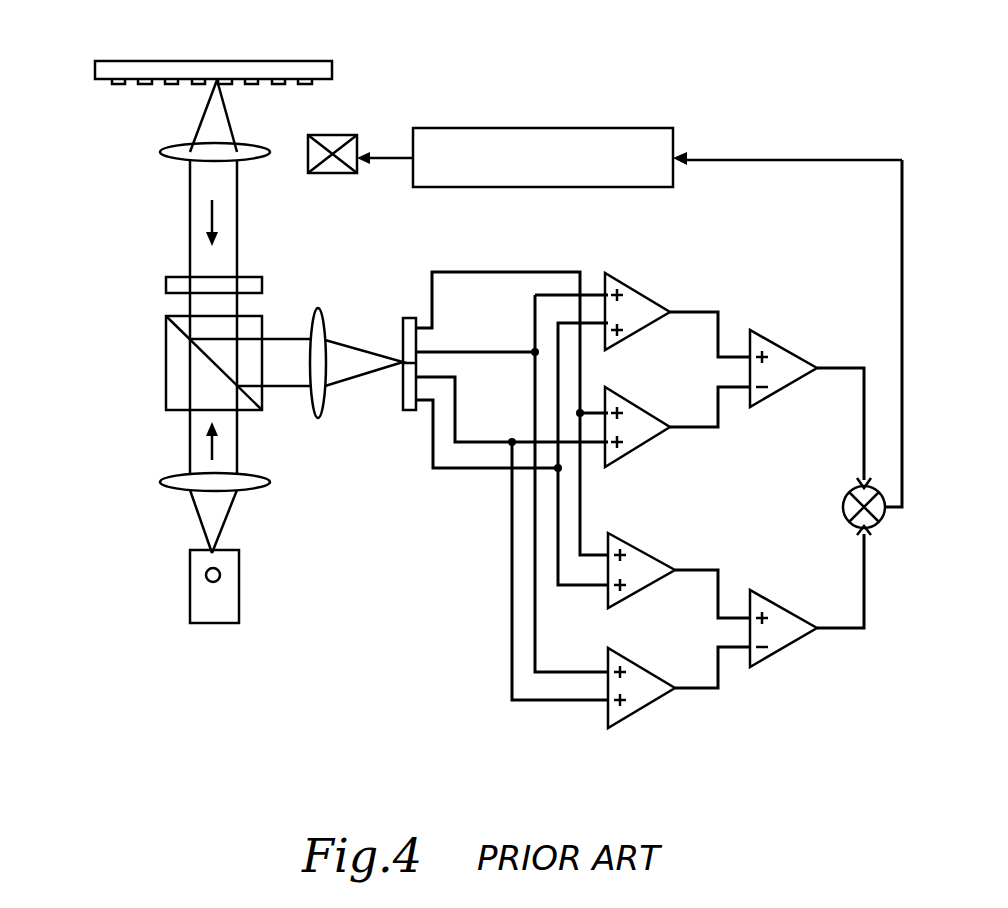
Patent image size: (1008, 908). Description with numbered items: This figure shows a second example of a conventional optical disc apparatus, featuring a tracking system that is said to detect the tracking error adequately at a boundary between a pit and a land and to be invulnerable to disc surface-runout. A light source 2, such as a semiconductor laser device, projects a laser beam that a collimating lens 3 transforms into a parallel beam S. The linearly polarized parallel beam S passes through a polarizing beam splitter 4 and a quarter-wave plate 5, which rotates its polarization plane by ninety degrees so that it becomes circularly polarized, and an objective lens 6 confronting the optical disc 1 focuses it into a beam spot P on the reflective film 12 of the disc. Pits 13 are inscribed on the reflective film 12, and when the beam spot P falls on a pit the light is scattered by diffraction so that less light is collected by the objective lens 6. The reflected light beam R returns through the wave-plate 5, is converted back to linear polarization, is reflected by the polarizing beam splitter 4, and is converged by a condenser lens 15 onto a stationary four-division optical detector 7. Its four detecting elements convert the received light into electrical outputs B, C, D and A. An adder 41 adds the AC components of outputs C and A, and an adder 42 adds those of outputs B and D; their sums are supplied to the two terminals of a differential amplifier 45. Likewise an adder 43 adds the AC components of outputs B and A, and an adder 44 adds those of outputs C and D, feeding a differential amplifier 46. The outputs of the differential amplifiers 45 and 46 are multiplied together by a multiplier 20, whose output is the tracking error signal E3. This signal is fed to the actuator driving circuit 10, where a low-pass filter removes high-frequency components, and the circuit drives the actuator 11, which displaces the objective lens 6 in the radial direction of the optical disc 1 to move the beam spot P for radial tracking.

The optical disc 1 is at (285, 62).
The reflective film 12 is at (105, 85).
The pits 13 is at (293, 84).
The beam spot P is at (218, 83).
The objective lens 6 is at (172, 155).
The reflected light beam R is at (206, 221).
The quarter-wave plate 5 is at (262, 285).
The polarizing beam splitter 4 is at (166, 350).
The condenser lens 15 is at (322, 327).
The parallel beam S is at (205, 445).
The collimating lens 3 is at (260, 488).
The light source 2 is at (233, 576).
The 4-division optical detector 7 is at (402, 413).
The actuator 11 is at (330, 175).
The actuator driving circuit 10 is at (522, 128).
The output signal A is at (455, 470).
The output signal B is at (541, 272).
The output signal C is at (476, 351).
The output signal D is at (478, 442).
The adder 41 is at (648, 296).
The adder 42 is at (648, 411).
The adder 43 is at (653, 551).
The adder 44 is at (653, 668).
The differential amplifier 45 is at (780, 340).
The differential amplifier 46 is at (785, 612).
The tracking error signal E3 is at (902, 320).
The multiplier 20 is at (845, 505).